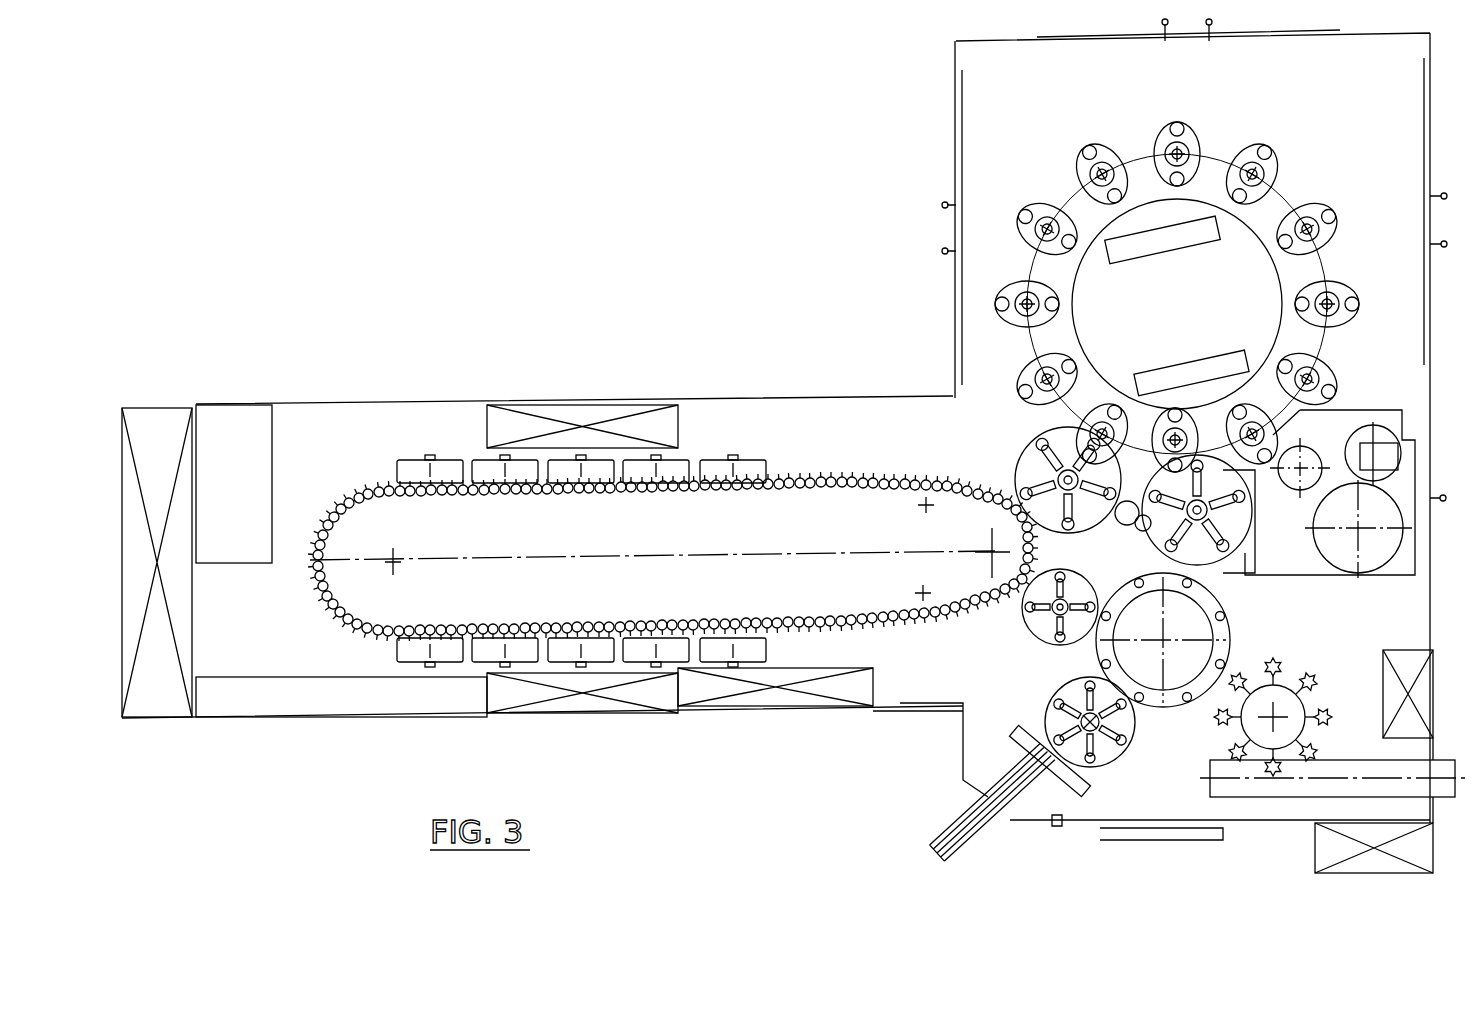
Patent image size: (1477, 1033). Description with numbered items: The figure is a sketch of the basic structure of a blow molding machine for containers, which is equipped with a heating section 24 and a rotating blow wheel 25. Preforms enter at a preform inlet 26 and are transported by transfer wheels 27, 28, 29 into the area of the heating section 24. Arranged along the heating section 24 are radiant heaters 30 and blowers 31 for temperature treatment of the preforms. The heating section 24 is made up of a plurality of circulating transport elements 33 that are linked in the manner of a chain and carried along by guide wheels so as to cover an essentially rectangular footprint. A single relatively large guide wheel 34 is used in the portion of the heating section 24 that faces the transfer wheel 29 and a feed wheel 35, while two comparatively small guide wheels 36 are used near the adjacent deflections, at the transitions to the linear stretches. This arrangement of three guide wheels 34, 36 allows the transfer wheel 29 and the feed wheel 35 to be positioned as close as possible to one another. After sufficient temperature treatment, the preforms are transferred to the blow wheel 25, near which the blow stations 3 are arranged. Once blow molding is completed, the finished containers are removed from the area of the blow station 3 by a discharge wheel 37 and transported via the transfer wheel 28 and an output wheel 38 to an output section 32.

The blow station 3 is at (1009, 286).
The heating section 24 is at (722, 433).
The blow wheel 25 is at (1087, 288).
The preform inlet 26 is at (993, 827).
The transfer wheel 27 is at (1107, 763).
The transfer wheel 28 is at (1163, 707).
The transfer wheel 29 is at (1040, 640).
The radiant heater 30 is at (447, 462).
The blower 31 is at (573, 413).
The output section 32 is at (1440, 785).
The transport element 33 is at (363, 630).
The guide wheel 34 is at (393, 562).
The feed wheel 35 is at (1040, 430).
The guide wheel 36 is at (926, 505).
The discharge wheel 37 is at (1253, 532).
The output wheel 38 is at (1285, 727).